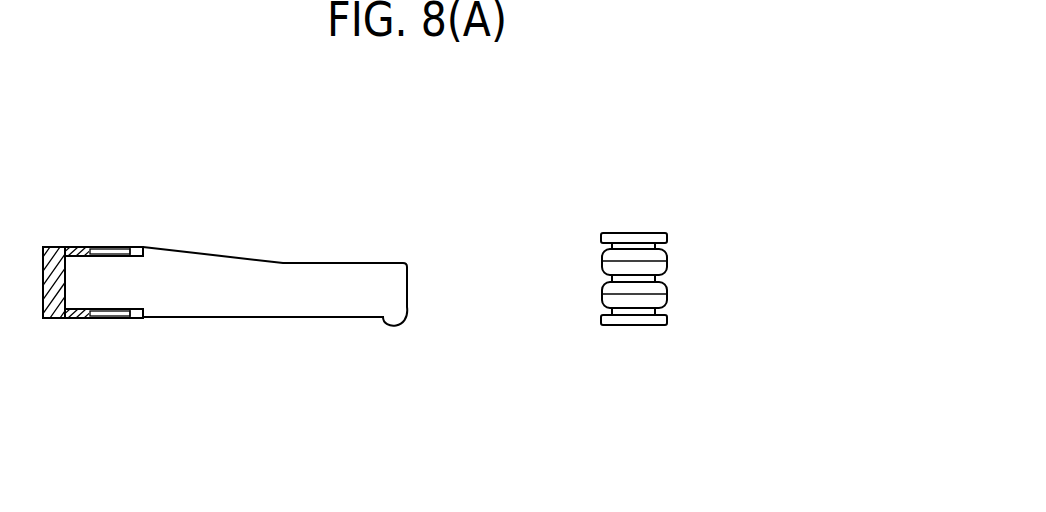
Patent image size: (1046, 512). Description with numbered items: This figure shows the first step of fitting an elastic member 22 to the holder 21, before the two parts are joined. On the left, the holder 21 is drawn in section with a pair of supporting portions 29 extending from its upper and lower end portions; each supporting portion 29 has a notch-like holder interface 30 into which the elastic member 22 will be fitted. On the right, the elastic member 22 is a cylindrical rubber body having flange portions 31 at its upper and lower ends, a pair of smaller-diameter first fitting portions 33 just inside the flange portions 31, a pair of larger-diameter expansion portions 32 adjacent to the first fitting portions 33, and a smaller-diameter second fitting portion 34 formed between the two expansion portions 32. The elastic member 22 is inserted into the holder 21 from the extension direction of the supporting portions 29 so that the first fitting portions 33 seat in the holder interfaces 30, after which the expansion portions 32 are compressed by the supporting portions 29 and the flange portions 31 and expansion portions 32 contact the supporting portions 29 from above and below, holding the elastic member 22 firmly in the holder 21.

The holder 21 is at (55, 247).
The elastic member 22 is at (684, 277).
The supporting portions 29 is at (88, 247).
The holder interfaces 30 is at (118, 247).
The flange portions 31 is at (667, 238).
The expansion portions 32 is at (663, 260).
The first fitting portions 33 is at (657, 247).
The second fitting portion 34 is at (657, 278).